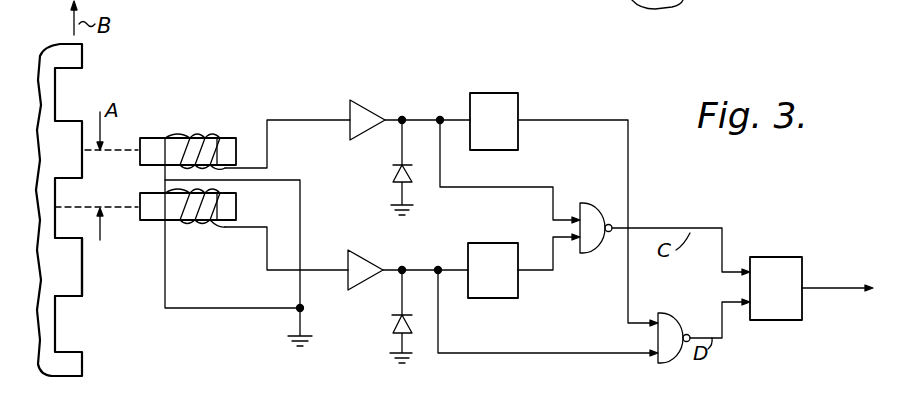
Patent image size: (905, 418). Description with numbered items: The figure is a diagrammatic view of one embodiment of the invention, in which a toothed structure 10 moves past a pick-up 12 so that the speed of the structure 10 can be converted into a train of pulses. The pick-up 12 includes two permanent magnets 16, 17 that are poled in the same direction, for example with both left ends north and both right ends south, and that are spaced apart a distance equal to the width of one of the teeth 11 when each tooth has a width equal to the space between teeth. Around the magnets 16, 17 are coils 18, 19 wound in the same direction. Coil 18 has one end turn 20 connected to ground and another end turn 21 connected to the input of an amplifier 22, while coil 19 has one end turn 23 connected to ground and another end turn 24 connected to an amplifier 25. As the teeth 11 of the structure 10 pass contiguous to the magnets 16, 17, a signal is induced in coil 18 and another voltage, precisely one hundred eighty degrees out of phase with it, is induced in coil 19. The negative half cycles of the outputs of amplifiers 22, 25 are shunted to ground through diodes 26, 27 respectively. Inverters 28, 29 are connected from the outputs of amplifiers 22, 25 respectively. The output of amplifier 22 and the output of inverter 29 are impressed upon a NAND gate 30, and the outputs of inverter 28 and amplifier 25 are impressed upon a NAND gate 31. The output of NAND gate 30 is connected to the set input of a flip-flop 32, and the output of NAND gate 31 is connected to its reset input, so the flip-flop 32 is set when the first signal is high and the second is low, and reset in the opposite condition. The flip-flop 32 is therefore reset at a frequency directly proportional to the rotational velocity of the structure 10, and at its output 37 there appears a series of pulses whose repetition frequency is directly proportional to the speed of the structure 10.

The structure 10 is at (40, 46).
The teeth 11 is at (83, 282).
The pick-up 12 is at (203, 88).
The permanent magnet 16 is at (152, 137).
The permanent magnet 17 is at (218, 224).
The coil 18 is at (192, 137).
The coil 19 is at (182, 224).
The end turn 20 is at (163, 174).
The end turn 21 is at (243, 167).
The amplifier 22 is at (367, 110).
The end turn 23 is at (165, 262).
The end turn 24 is at (257, 226).
The amplifier 25 is at (369, 256).
The diode 26 is at (377, 165).
The diode 27 is at (384, 332).
The inverter 28 is at (513, 93).
The inverter 29 is at (490, 243).
The NAND gate 30 is at (606, 186).
The NAND gate 31 is at (681, 314).
The flip-flop 32 is at (787, 248).
The output 37 is at (831, 289).